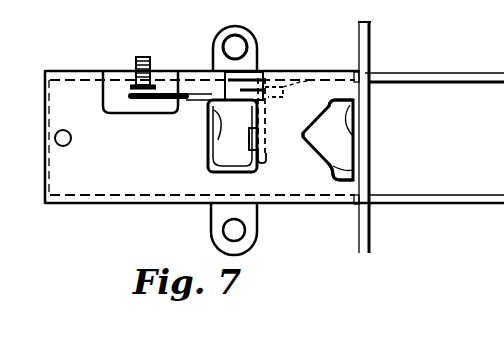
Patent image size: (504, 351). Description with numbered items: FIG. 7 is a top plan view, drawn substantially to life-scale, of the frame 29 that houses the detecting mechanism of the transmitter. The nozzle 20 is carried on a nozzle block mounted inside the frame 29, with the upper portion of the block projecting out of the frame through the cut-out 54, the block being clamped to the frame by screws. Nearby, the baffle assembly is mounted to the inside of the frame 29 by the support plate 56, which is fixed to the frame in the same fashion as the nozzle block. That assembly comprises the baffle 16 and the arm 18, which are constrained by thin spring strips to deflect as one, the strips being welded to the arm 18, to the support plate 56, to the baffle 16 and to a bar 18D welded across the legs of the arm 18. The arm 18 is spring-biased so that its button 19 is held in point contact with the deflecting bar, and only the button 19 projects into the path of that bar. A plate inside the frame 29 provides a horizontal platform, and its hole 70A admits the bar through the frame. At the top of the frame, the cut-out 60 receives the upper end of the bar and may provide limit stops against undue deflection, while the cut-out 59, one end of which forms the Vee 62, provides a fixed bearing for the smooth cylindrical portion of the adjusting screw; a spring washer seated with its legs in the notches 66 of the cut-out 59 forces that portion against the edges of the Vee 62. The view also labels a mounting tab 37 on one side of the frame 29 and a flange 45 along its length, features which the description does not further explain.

The baffle 16 is at (274, 122).
The arm 18 is at (268, 148).
The bar 18D is at (310, 82).
The button 19 is at (249, 142).
The nozzle 20 is at (130, 93).
The frame 29 is at (30, 172).
The mounting tab 37 is at (258, 50).
The channel flange 45 is at (448, 72).
The cut-out 54 is at (128, 97).
The support plate 56 is at (262, 74).
The cut-out 59 is at (345, 103).
The cut-out 60 is at (208, 167).
The Vee 62 is at (305, 136).
The notches 66 is at (358, 100).
The hole 70A is at (211, 139).